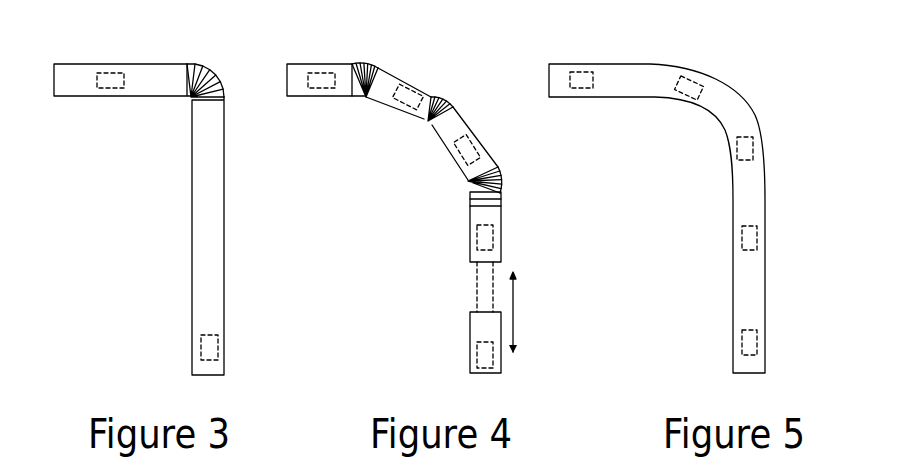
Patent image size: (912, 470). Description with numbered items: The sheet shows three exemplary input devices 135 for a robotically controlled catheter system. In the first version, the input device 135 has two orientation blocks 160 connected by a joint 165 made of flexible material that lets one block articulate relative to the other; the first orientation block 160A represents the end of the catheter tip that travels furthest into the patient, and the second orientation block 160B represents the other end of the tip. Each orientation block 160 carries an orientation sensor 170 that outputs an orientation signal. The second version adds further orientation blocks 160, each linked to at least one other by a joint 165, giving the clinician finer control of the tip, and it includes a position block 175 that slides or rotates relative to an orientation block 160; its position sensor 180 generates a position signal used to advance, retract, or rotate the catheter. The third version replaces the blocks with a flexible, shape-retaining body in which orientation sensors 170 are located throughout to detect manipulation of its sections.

In FIG. 3, the input device 135 is at (207, 35).
In FIG. 4, the input device 135 is at (458, 34).
In FIG. 5, the input device 135 is at (728, 78).
In FIG. 4, the orientation block 160 is at (318, 65).
In FIG. 3, the first orientation block 160A is at (82, 97).
In FIG. 3, the second orientation block 160B is at (192, 233).
In FIG. 3, the joint 165 is at (222, 85).
In FIG. 4, the joint 165 is at (368, 66).
In FIG. 3, the orientation sensor 170 is at (112, 72).
In FIG. 4, the orientation sensor 170 is at (415, 88).
In FIG. 5, the orientation sensor 170 is at (583, 72).
In FIG. 4, the position block 175 is at (468, 340).
In FIG. 4, the position sensor 180 is at (485, 368).